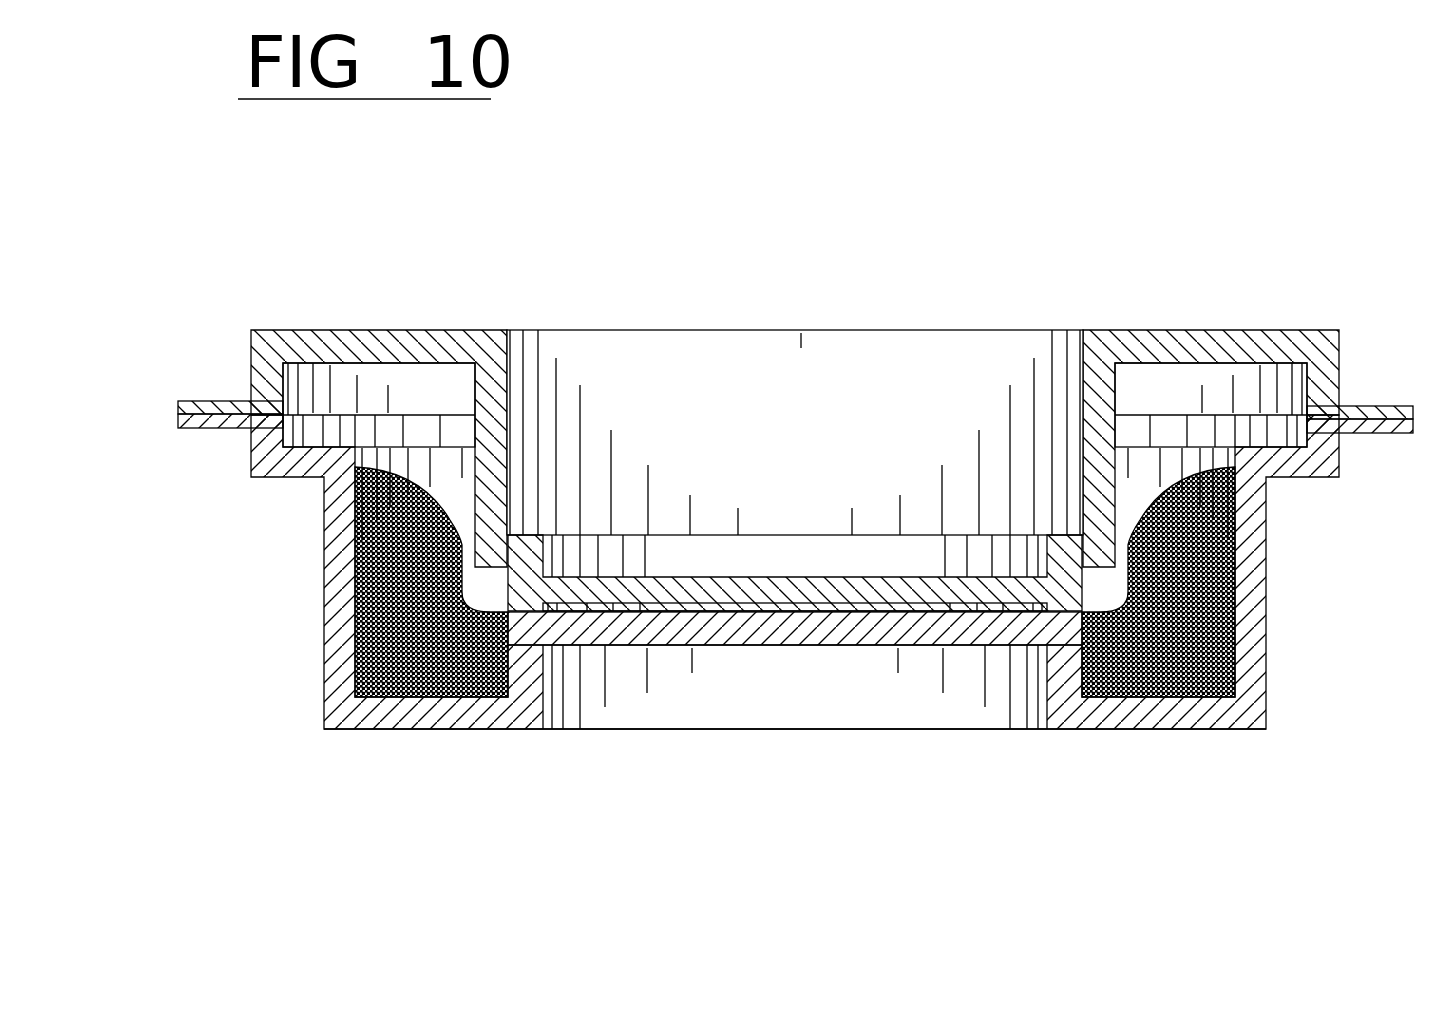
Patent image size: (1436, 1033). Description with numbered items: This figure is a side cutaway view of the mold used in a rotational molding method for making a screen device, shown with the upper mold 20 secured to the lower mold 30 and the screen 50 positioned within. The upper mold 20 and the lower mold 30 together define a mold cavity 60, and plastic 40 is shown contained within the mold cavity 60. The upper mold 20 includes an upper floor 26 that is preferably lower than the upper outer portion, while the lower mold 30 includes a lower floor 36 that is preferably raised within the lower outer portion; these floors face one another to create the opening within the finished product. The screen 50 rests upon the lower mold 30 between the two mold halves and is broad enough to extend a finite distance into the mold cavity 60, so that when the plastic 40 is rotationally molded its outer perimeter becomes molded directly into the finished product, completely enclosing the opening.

The upper mold 20 is at (1038, 330).
The upper floor 26 is at (770, 592).
The lower mold 30 is at (324, 580).
The lower floor 36 is at (750, 637).
The plastic 40 is at (377, 673).
The screen 50 is at (988, 612).
The mold cavity 60 is at (418, 430).